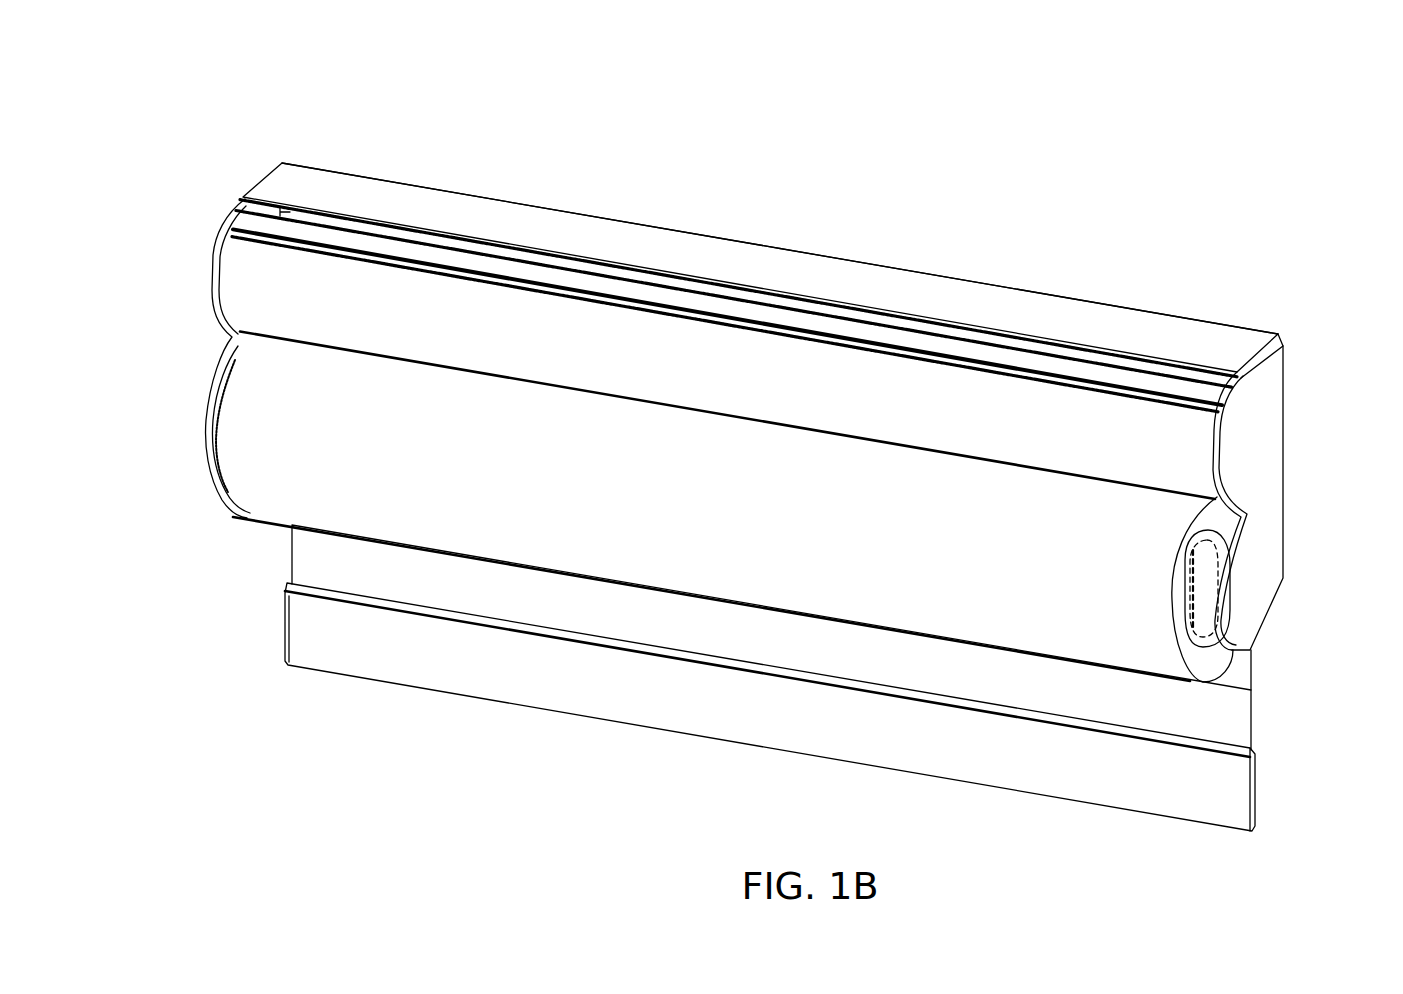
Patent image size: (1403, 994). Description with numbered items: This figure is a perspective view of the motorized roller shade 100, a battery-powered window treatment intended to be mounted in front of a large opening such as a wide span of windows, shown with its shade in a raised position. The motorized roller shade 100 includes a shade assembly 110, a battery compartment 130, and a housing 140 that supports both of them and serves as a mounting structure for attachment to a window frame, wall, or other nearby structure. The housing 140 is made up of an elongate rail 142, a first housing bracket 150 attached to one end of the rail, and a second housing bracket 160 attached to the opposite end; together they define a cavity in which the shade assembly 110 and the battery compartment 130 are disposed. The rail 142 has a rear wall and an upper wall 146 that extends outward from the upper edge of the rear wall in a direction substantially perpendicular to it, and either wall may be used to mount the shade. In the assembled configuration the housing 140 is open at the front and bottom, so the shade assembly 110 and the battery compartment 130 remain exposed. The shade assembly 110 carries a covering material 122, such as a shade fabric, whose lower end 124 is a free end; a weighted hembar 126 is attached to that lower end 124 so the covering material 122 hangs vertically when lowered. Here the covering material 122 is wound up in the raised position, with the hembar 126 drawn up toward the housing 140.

The motorized roller shade 100 is at (189, 146).
The shade assembly 110 is at (250, 544).
The covering material 122 is at (1230, 692).
The lower end 124 is at (1202, 738).
The hembar 126 is at (474, 668).
The battery compartment 130 is at (874, 378).
The housing 140 is at (694, 256).
The rail 142 is at (422, 208).
The upper wall 146 is at (1108, 323).
The first housing bracket 150 is at (210, 282).
The second housing bracket 160 is at (1258, 452).